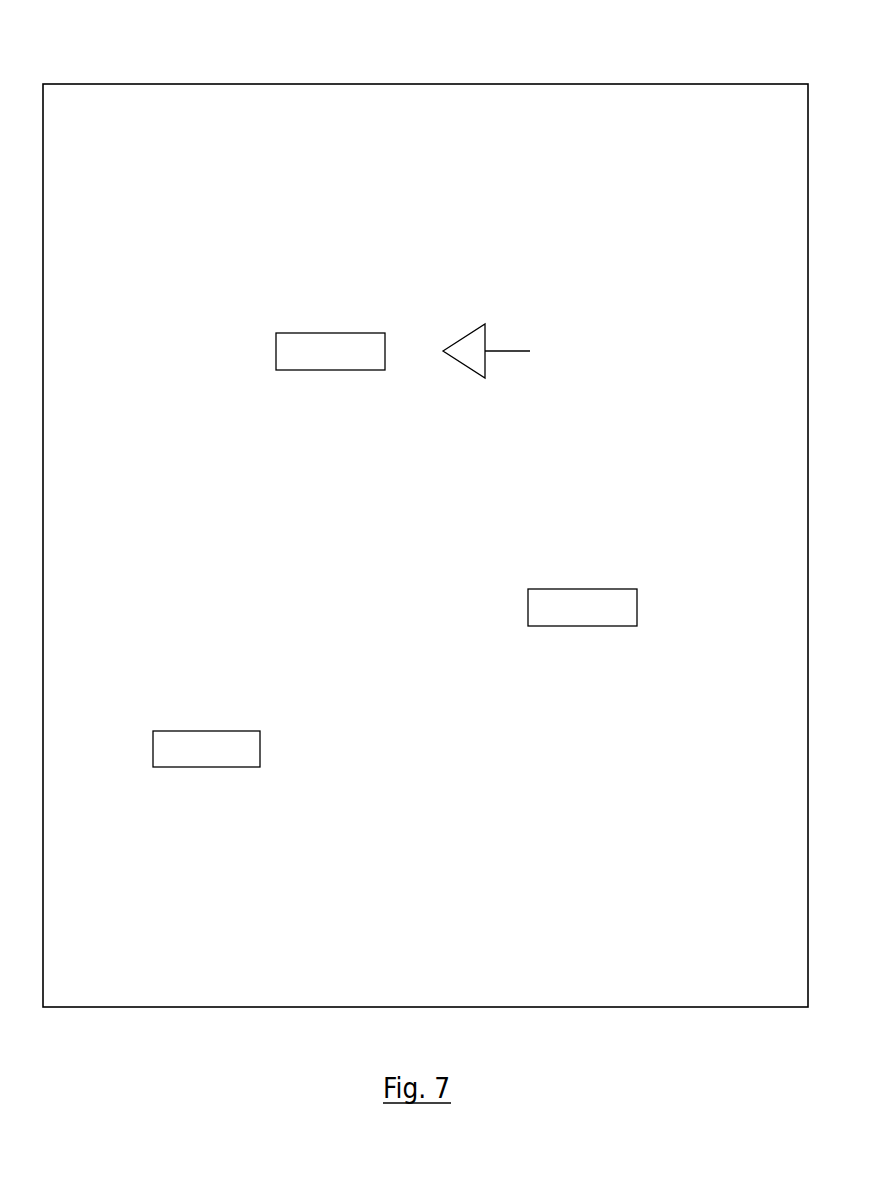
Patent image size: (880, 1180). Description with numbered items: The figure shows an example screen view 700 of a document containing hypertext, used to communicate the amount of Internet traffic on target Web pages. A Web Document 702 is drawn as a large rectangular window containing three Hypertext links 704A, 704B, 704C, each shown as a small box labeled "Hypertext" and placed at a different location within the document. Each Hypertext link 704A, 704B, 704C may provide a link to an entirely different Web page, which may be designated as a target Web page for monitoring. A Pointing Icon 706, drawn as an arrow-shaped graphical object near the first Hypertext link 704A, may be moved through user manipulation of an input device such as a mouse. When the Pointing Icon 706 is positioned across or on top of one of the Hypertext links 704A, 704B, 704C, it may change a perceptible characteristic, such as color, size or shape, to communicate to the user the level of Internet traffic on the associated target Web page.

The display screen view 700 is at (452, 42).
The Web Document 702 is at (217, 84).
The Hypertext link 704A is at (296, 333).
The Hypertext link 704B is at (548, 589).
The Hypertext link 704C is at (178, 731).
The Pointing Icon 706 is at (470, 334).